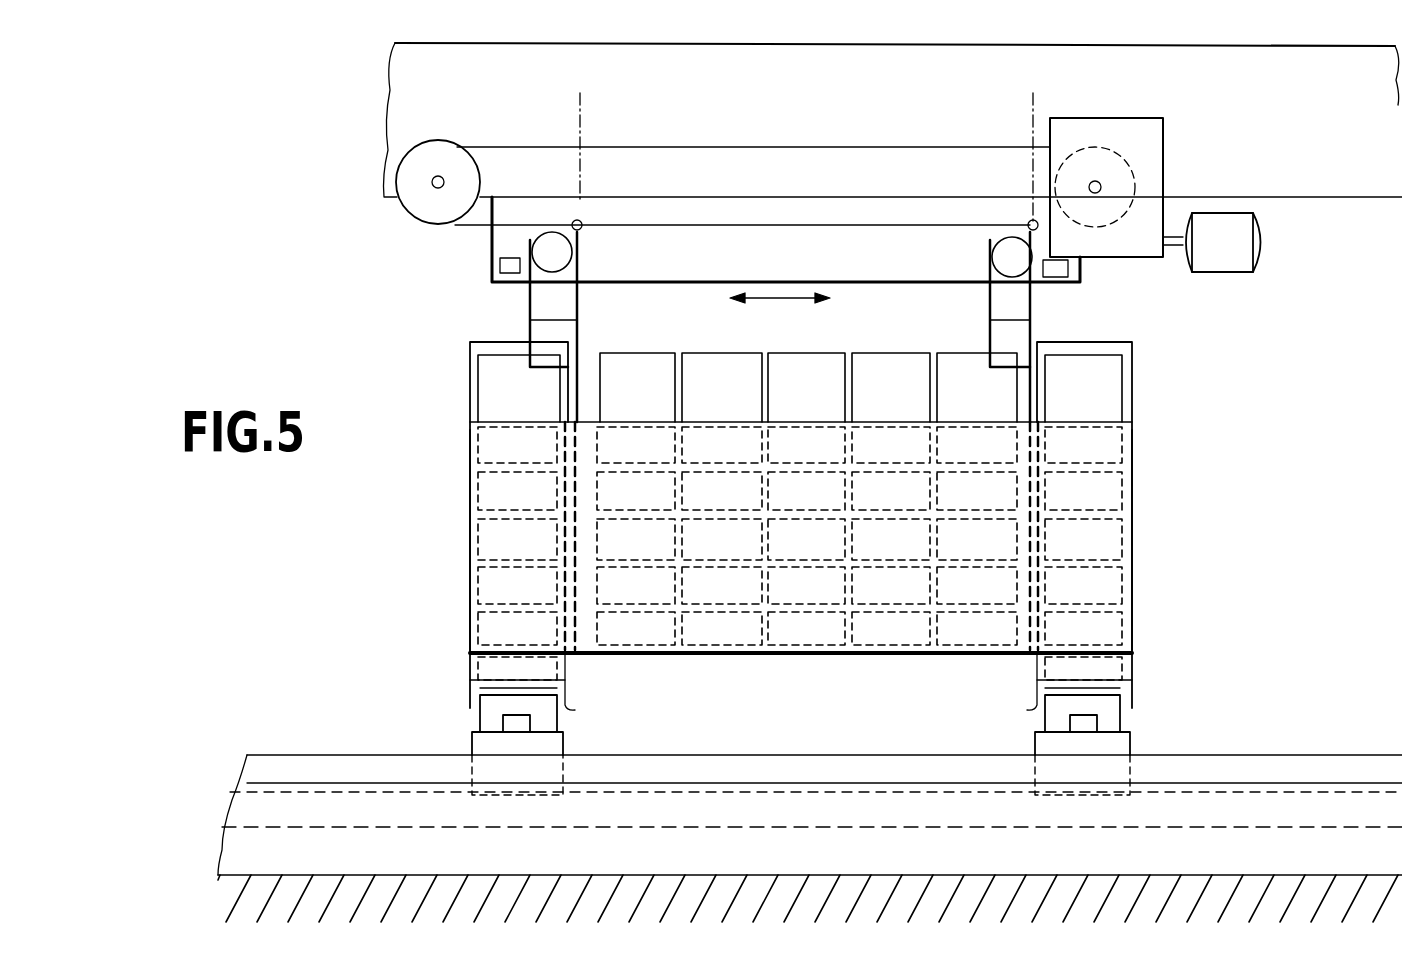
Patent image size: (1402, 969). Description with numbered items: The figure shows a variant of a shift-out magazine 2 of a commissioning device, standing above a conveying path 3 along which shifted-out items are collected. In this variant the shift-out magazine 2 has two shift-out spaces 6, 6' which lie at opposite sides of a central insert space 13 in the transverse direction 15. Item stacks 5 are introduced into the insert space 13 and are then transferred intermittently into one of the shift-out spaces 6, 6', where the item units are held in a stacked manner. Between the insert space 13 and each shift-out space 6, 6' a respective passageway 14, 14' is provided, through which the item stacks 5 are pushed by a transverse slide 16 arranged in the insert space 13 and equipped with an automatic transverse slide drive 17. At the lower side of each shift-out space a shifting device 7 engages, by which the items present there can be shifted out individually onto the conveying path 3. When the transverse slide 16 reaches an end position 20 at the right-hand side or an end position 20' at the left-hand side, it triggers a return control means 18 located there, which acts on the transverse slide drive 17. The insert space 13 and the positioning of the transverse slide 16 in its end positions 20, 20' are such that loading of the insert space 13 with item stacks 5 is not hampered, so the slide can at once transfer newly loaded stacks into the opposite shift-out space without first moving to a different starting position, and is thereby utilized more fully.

The shift-out magazine 2 is at (665, 653).
The conveying path 3 is at (1235, 832).
The item stack 5 is at (505, 490).
The shift-out space 6 is at (1165, 540).
The shift-out space 6' is at (441, 540).
The shifting device 7 is at (470, 745).
The insert space 13 is at (842, 610).
The passageway 14 is at (1005, 571).
The passageway 14' is at (601, 571).
The transverse direction 15 is at (800, 305).
The transverse slide 16 is at (580, 335).
The transverse slide drive 17 is at (1145, 148).
The return control means 18 is at (500, 265).
The end position 20 is at (998, 158).
The end position 20' is at (614, 158).